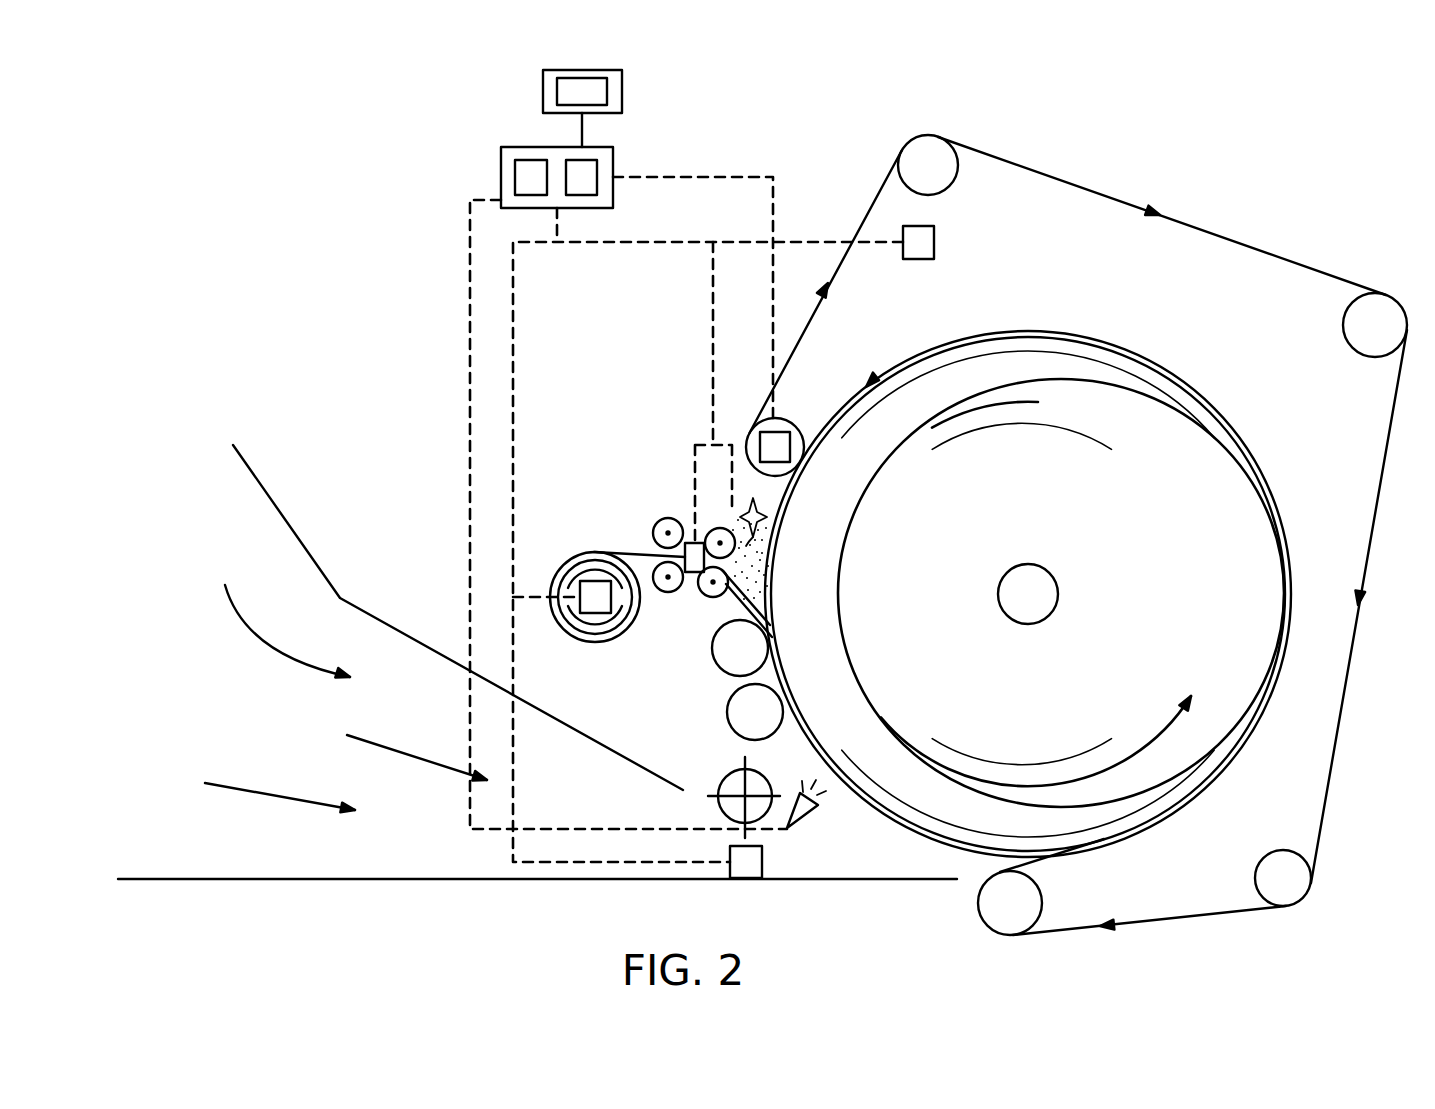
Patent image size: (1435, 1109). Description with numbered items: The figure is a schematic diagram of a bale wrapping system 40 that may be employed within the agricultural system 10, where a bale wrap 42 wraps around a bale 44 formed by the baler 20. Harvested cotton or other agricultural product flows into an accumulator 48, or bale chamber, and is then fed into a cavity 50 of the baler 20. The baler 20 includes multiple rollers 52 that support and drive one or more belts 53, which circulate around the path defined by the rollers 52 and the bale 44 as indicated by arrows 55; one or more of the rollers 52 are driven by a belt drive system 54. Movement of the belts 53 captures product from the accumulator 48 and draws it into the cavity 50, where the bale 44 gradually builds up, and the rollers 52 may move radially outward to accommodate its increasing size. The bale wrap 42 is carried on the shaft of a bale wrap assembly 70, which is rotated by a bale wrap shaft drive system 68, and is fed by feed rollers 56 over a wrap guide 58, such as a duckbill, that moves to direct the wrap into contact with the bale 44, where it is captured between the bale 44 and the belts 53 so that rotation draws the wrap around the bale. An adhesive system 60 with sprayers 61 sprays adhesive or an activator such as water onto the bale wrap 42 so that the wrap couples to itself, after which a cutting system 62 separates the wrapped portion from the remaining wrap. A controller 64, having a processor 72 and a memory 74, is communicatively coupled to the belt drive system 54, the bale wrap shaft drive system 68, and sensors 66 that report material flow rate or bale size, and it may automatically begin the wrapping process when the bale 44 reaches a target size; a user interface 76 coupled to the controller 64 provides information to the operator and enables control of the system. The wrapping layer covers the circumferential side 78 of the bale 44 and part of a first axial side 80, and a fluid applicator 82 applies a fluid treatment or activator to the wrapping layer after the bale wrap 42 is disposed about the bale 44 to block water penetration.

The agricultural system 10 is at (1282, 140).
The baler 20 is at (798, 172).
The bale wrapping system 40 is at (478, 408).
The bale wrap 42 is at (640, 550).
The bale 44 is at (1205, 435).
The accumulator 48 is at (390, 625).
The cavity 50 is at (877, 865).
The rollers 52 is at (917, 153).
The belts 53 is at (1405, 531).
The belt drive system 54 is at (790, 446).
The arrows 55 is at (830, 283).
The feed rollers 56 is at (660, 522).
The wrap guide 58 is at (730, 610).
The adhesive system 60 is at (822, 527).
The sprayers 61 is at (756, 546).
The cutting system 62 is at (705, 542).
The controller 64 is at (560, 147).
The sensors 66 is at (934, 242).
The bale wrap shaft drive system 68 is at (592, 613).
The bale wrap assembly 70 is at (603, 653).
The processor 72 is at (513, 182).
The memory 74 is at (598, 178).
The user interface 76 is at (543, 88).
The circumferential side 78 is at (1053, 330).
The first axial side 80 is at (1250, 612).
The fluid applicator 82 is at (800, 798).